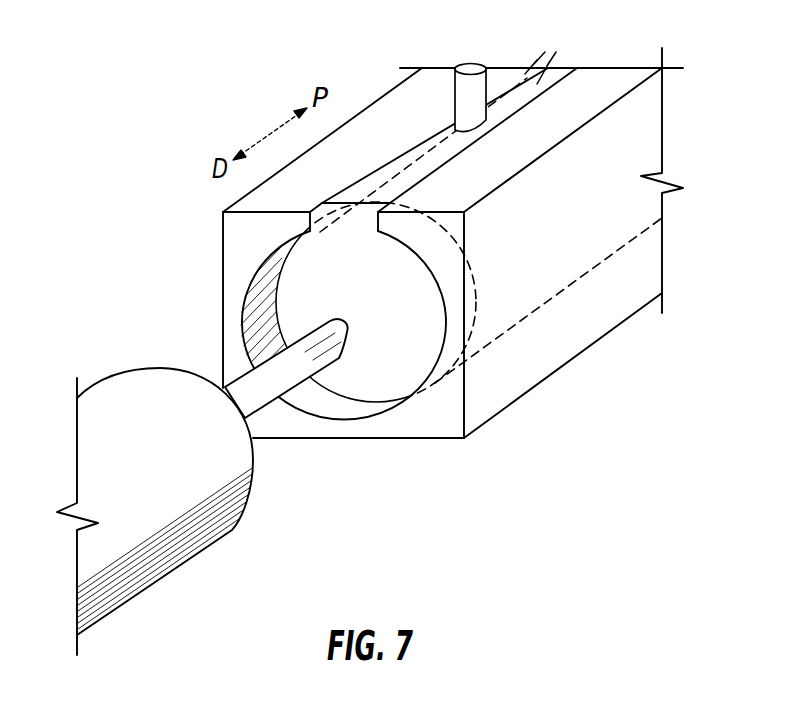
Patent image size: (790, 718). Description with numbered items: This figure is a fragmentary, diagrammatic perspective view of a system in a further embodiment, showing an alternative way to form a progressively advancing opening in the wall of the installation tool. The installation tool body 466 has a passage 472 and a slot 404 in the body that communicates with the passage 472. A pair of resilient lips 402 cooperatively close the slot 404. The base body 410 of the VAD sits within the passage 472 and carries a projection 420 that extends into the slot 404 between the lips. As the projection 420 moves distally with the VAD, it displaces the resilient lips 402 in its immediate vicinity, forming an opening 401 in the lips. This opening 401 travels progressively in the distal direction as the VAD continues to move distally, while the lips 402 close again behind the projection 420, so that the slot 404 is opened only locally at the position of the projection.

The opening 401 is at (486, 120).
The resilient lips 402 is at (519, 66).
The slot 404 is at (317, 223).
The base body 410 is at (305, 308).
The projection 420 is at (455, 95).
The installation tool body 466 is at (648, 142).
The passage 472 is at (350, 400).